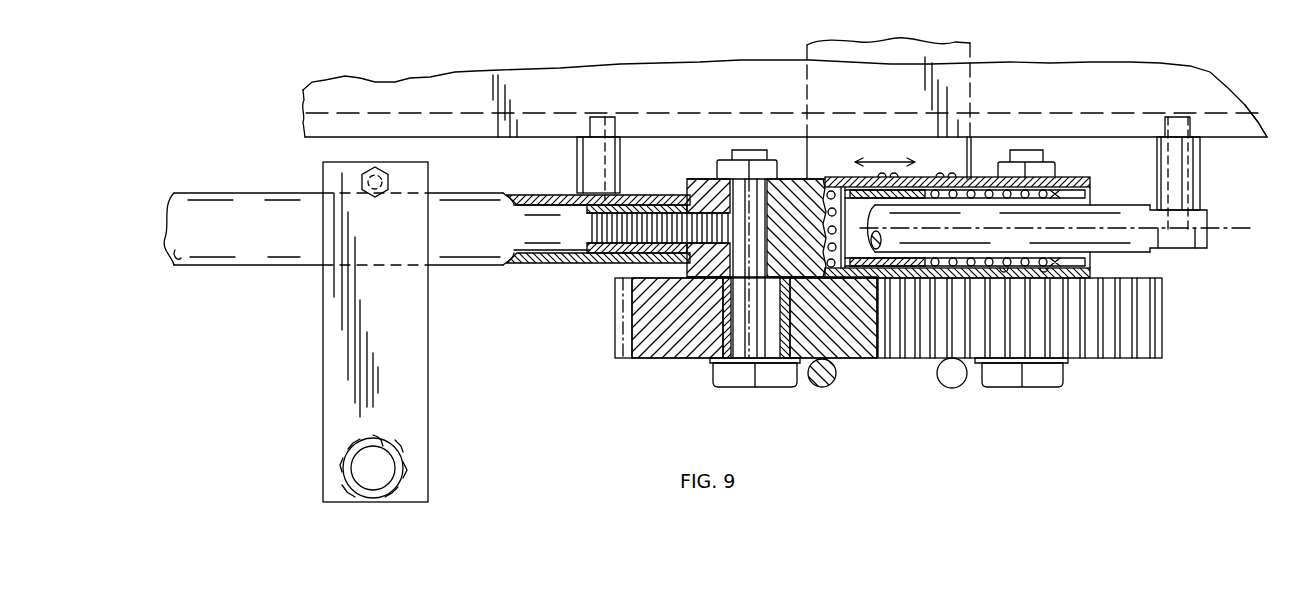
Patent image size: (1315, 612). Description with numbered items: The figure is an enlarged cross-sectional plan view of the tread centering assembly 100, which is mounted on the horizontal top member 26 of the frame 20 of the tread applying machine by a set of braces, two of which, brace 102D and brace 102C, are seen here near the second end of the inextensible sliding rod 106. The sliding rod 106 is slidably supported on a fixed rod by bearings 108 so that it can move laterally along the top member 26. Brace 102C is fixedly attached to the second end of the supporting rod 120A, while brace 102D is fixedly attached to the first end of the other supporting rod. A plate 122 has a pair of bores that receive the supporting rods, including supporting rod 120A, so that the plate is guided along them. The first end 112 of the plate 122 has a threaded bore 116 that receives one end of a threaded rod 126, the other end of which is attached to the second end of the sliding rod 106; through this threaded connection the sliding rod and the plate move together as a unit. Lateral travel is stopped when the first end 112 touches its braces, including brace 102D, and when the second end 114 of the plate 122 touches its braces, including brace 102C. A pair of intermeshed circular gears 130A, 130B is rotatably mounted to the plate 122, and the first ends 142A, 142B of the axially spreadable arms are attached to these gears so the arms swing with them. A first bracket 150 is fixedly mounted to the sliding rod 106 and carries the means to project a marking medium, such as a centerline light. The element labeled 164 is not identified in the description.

The frame 20 is at (1220, 74).
The horizontal top member 26 is at (1237, 140).
The mounting bracket 164 is at (972, 52).
The brace 102D is at (578, 164).
The brace 102C is at (1202, 182).
The first bracket 150 is at (326, 372).
The inextensible sliding rod 106 is at (473, 268).
The threaded bore 116 is at (688, 252).
The threaded rod 126 is at (612, 247).
The first end of the plate 112 is at (689, 178).
The plate 122 is at (792, 174).
The second end of the plate 114 is at (1087, 182).
The bearings 108 is at (1035, 190).
The supporting rod 120A is at (1143, 252).
The circular gear 130A is at (680, 360).
The circular gear 130B is at (1153, 342).
The first end of arm 142A is at (820, 387).
The first end of arm 142B is at (953, 389).
The tread centering assembly 100 is at (874, 402).